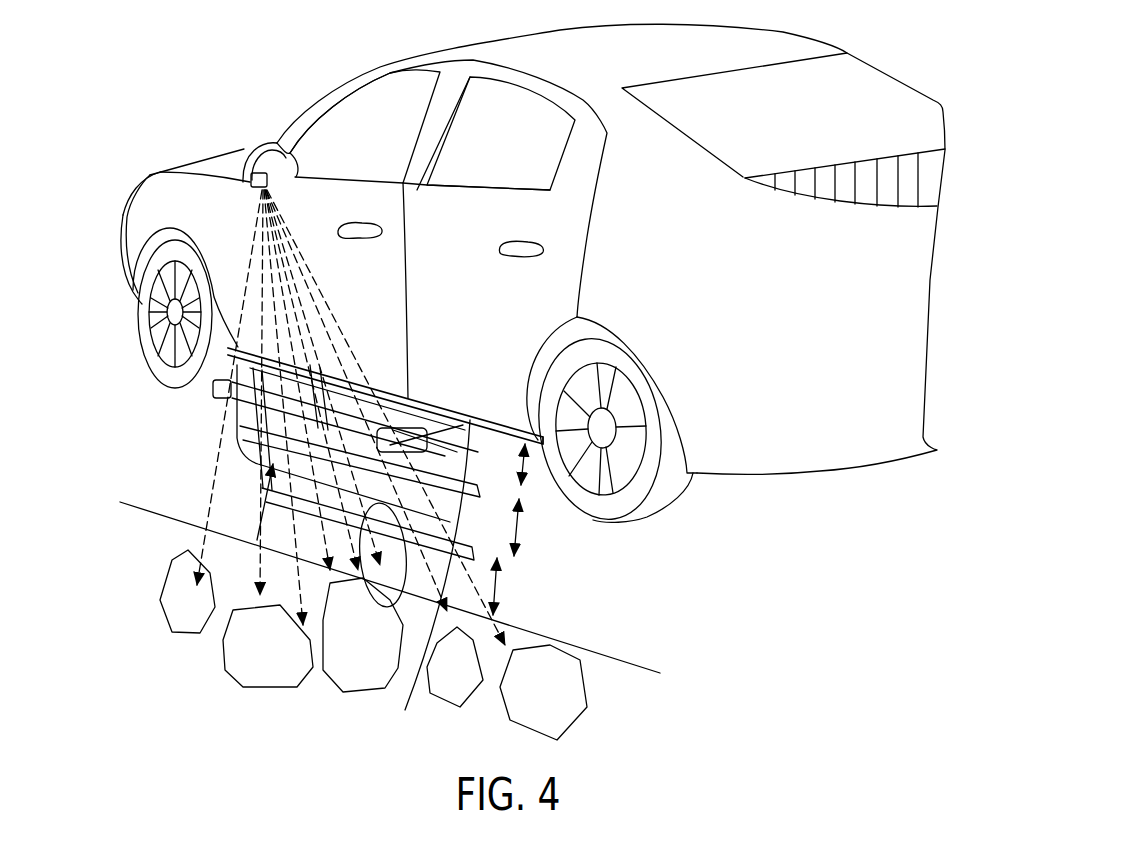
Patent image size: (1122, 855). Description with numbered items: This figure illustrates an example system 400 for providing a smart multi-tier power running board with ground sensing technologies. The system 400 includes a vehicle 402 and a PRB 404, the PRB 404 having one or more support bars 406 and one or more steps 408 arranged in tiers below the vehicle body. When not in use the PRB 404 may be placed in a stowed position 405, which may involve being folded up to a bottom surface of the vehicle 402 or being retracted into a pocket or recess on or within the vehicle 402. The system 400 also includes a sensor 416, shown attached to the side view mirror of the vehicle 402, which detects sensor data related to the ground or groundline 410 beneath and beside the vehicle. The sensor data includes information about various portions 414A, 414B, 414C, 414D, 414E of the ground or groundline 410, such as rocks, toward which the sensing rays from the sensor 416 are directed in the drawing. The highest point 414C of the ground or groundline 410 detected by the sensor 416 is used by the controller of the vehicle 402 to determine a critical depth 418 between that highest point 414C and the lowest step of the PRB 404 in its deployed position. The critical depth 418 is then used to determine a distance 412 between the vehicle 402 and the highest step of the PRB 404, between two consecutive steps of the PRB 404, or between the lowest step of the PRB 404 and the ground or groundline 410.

The system 400 is at (198, 77).
The vehicle 402 is at (208, 126).
The PRB 404 is at (230, 512).
The stowed position 405 is at (229, 355).
The support bars 406 is at (240, 437).
The steps 408 is at (458, 414).
The ground or groundline 410 is at (652, 652).
The distance 412 is at (535, 466).
The portion of the ground or groundline 414A is at (183, 620).
The portion of the ground or groundline 414B is at (253, 685).
The highest point 414C is at (360, 687).
The portion of the ground or groundline 414D is at (445, 692).
The portion of the ground or groundline 414E is at (573, 712).
The sensor 416 is at (251, 183).
The critical depth 418 is at (357, 620).